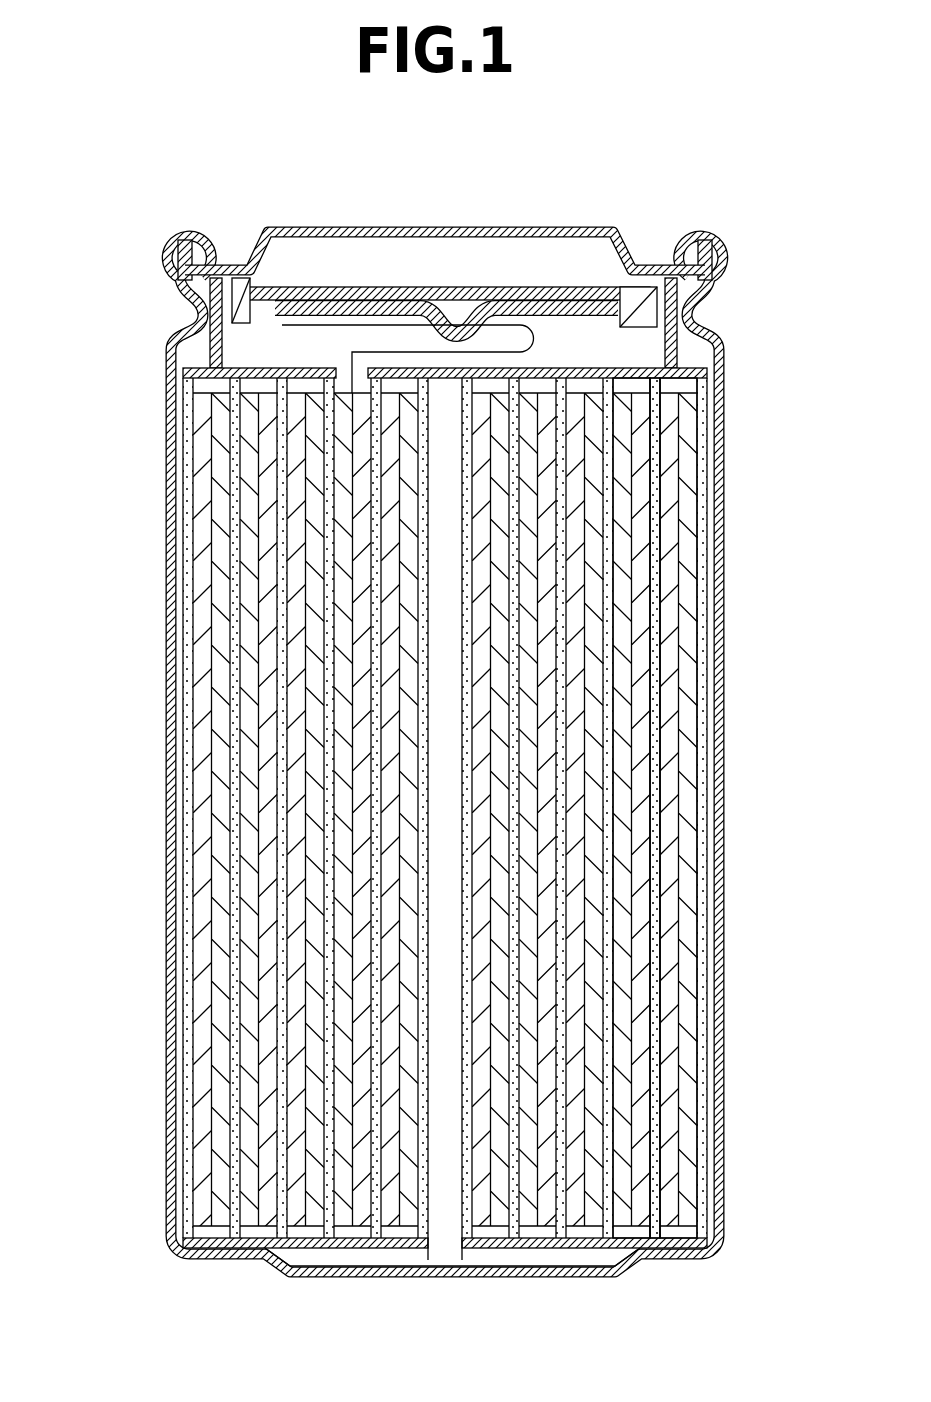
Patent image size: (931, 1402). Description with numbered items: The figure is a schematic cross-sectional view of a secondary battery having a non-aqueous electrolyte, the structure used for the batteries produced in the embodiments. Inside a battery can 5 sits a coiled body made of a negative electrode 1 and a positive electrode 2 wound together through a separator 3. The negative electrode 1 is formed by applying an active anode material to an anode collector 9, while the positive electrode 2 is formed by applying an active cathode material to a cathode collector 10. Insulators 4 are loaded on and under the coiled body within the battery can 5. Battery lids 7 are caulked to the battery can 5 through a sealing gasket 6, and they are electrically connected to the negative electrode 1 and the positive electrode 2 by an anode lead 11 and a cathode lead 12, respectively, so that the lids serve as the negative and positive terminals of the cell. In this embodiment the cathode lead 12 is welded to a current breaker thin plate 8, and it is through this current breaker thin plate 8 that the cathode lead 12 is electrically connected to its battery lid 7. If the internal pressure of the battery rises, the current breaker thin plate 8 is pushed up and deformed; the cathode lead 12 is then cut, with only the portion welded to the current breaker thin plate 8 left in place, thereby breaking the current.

The negative electrode 1 is at (683, 495).
The positive electrode 2 is at (641, 610).
The separator 3 is at (655, 802).
The insulators 4 is at (690, 1252).
The battery can 5 is at (170, 558).
The sealing gasket 6 is at (173, 240).
The battery lids 7 is at (454, 227).
The current breaker thin plate 8 is at (323, 292).
The anode collector 9 is at (211, 840).
The cathode collector 10 is at (257, 1060).
The anode lead 11 is at (270, 1272).
The cathode lead 12 is at (533, 337).